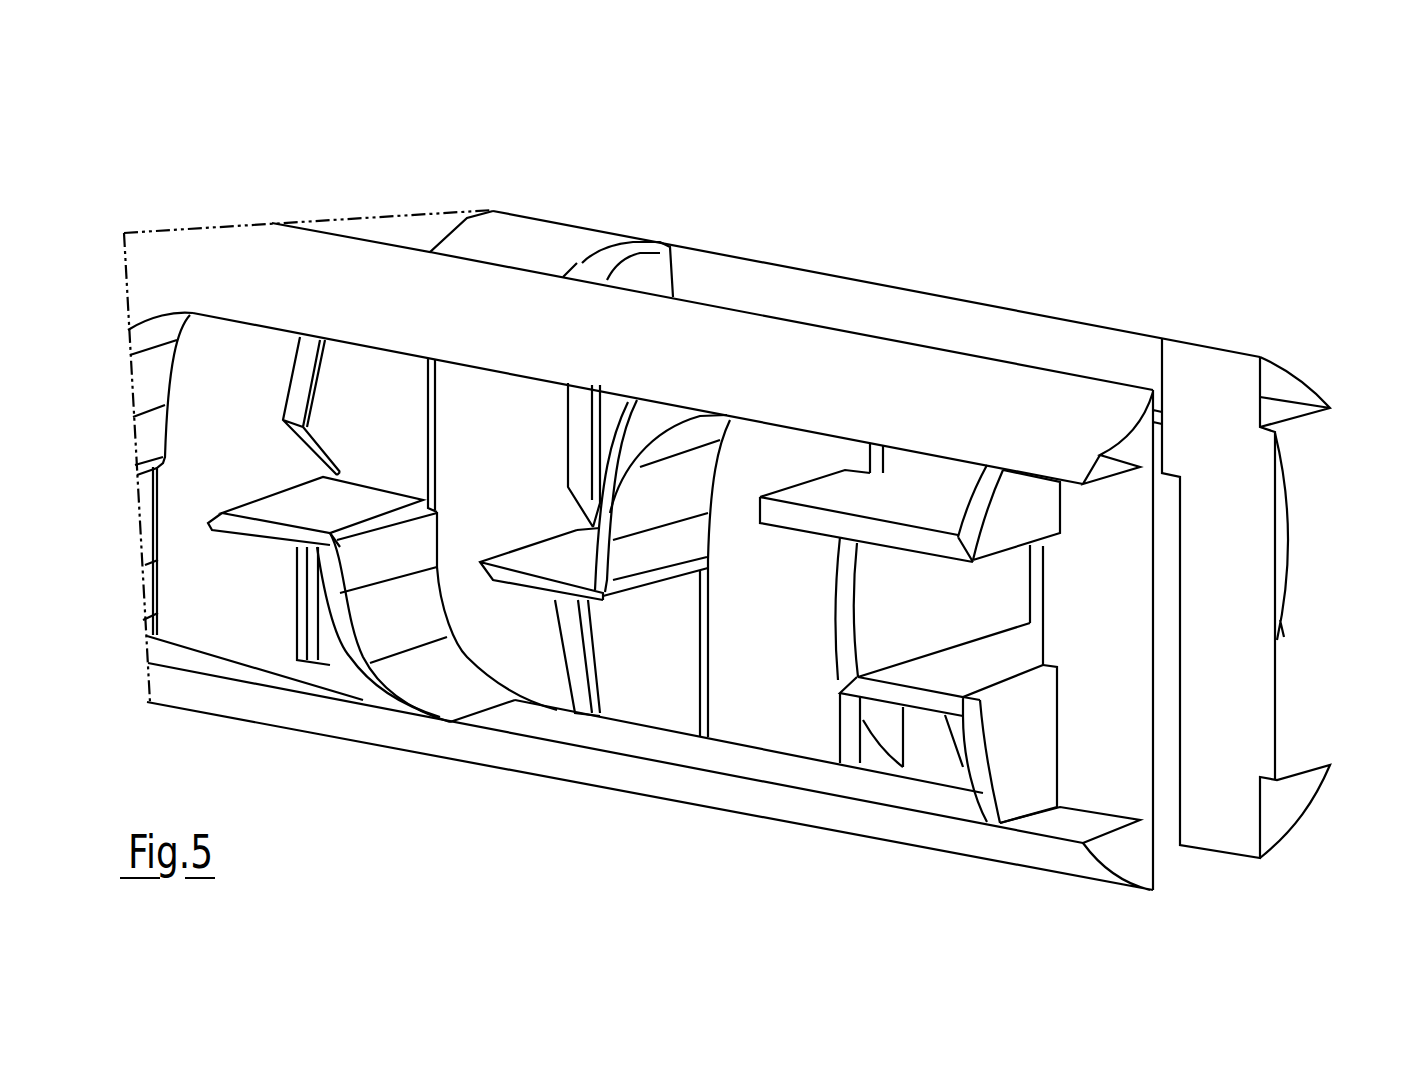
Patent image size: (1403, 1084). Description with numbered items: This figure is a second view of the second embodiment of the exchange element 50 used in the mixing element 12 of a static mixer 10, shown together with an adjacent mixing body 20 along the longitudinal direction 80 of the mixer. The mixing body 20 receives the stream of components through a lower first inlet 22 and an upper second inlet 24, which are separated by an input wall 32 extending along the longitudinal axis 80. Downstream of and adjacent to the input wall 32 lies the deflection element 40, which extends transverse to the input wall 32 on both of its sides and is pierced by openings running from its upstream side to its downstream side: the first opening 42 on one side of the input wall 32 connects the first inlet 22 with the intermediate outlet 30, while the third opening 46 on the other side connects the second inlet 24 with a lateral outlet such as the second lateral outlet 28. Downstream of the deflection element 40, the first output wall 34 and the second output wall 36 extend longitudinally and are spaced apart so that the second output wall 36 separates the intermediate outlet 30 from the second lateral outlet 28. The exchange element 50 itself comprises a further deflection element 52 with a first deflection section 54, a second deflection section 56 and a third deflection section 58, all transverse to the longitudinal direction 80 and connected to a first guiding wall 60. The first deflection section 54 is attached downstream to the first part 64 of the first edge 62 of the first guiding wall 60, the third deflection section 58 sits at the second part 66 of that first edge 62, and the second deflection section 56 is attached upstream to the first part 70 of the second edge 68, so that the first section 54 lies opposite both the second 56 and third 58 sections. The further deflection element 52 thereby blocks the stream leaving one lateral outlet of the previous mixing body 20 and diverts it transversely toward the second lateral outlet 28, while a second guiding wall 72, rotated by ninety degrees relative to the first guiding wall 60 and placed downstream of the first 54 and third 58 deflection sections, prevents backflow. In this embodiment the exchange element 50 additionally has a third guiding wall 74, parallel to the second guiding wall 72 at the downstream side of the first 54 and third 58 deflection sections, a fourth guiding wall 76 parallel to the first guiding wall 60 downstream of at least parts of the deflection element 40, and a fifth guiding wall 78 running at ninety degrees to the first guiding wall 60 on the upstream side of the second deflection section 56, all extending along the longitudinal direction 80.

The static mixer 10 is at (754, 478).
The mixing element 12 is at (754, 478).
The mixing body 20 is at (1250, 153).
The first inlet 22 is at (507, 657).
The second inlet 24 is at (477, 412).
The second lateral outlet 28 is at (653, 673).
The intermediate outlet 30 is at (760, 300).
The input wall 32 is at (588, 568).
The first output wall 34 is at (890, 328).
The second output wall 36 is at (783, 634).
The deflection element 40 is at (580, 592).
The first opening 42 is at (725, 296).
The third opening 46 is at (648, 658).
The exchange element 50 is at (1155, 207).
The further deflection element 52 is at (933, 703).
The first deflection section 54 is at (1283, 520).
The second deflection section 56 is at (945, 624).
The third deflection section 58 is at (1037, 763).
The first guiding wall 60 is at (1000, 678).
The first edge 62 is at (1322, 512).
The first part of the first edge 64 is at (1280, 620).
The second part of the first edge 66 is at (983, 698).
The second edge 68 is at (782, 805).
The first part of the second edge 70 is at (847, 680).
The second guiding wall 72 is at (1245, 623).
The third guiding wall 74 is at (1122, 643).
The fourth guiding wall 76 is at (915, 512).
The fifth guiding wall 78 is at (912, 740).
The longitudinal direction 80 is at (1040, 210).